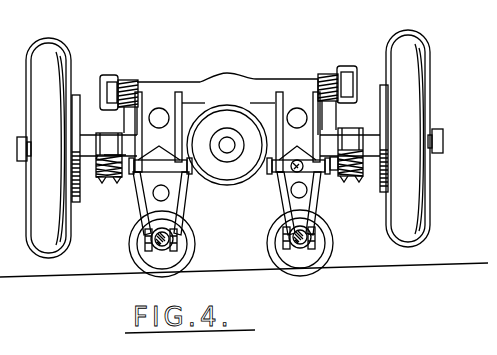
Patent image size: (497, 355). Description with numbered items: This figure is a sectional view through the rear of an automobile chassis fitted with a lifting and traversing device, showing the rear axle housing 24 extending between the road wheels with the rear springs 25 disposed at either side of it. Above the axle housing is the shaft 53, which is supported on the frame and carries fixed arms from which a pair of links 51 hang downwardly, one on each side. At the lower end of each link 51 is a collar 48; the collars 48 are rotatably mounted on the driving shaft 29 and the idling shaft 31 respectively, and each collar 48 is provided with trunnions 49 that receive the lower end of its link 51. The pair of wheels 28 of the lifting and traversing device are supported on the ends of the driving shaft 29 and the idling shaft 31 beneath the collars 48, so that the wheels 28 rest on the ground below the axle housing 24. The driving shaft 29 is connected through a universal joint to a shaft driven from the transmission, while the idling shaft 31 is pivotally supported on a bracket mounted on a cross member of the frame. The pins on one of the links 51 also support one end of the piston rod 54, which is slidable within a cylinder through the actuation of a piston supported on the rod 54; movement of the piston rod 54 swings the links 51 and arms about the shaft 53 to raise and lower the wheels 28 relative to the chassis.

The rear axle housing 24 is at (88, 140).
The rear springs 25 is at (357, 147).
The shaft 53 is at (246, 73).
The links 51 is at (184, 196).
The piston rod 54 is at (293, 168).
The trunnions 49 is at (145, 240).
The collars 48 is at (180, 246).
The wheels 28 is at (136, 256).
The driving shaft 29 is at (160, 246).
The idling shaft 31 is at (301, 246).